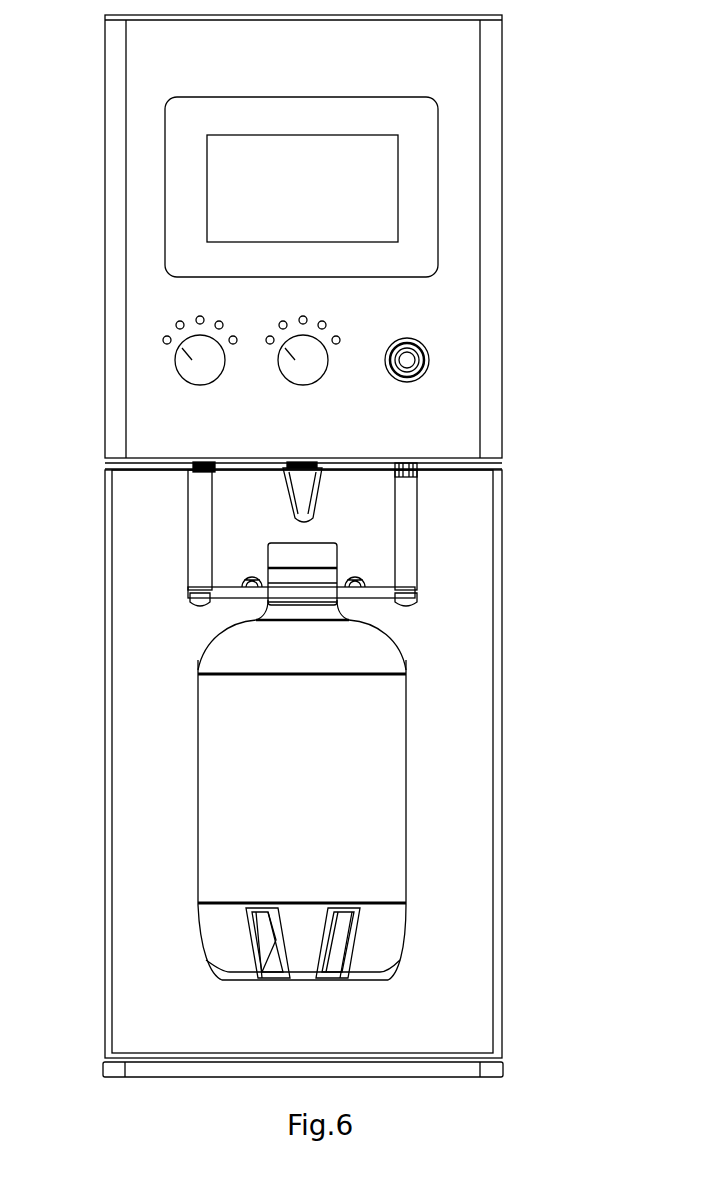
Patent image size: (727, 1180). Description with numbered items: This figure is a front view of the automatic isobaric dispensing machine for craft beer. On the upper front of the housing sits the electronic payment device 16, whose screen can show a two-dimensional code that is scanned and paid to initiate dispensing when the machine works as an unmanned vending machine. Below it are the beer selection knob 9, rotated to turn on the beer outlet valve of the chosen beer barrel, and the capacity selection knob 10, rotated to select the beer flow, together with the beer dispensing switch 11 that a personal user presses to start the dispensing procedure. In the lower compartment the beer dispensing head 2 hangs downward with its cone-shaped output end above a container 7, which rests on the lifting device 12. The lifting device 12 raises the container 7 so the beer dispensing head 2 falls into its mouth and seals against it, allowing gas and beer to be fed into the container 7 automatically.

The beer dispensing head 2 is at (312, 485).
The container 7 is at (345, 748).
The beer selection knob 9 is at (190, 362).
The capacity selection knob 10 is at (292, 350).
The beer dispensing switch 11 is at (425, 350).
The lifting device 12 is at (197, 598).
The electronic payment device 16 is at (368, 163).